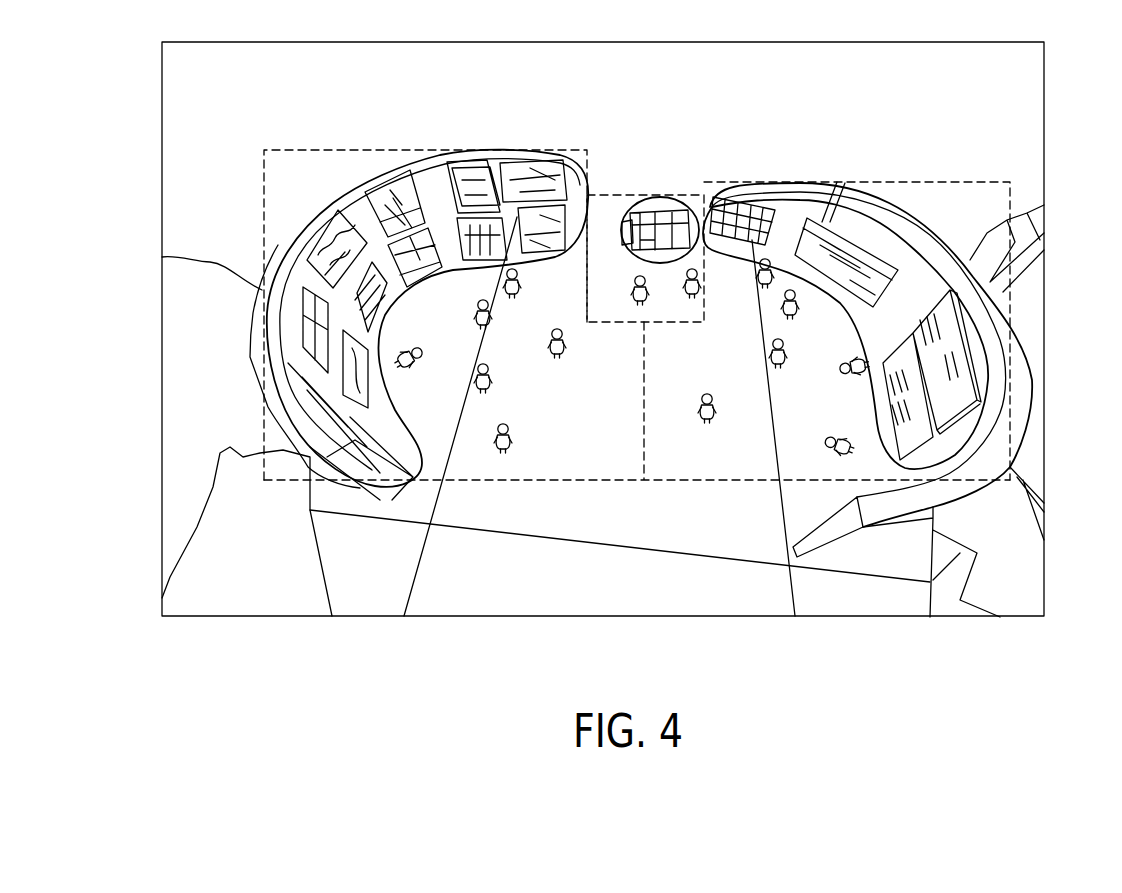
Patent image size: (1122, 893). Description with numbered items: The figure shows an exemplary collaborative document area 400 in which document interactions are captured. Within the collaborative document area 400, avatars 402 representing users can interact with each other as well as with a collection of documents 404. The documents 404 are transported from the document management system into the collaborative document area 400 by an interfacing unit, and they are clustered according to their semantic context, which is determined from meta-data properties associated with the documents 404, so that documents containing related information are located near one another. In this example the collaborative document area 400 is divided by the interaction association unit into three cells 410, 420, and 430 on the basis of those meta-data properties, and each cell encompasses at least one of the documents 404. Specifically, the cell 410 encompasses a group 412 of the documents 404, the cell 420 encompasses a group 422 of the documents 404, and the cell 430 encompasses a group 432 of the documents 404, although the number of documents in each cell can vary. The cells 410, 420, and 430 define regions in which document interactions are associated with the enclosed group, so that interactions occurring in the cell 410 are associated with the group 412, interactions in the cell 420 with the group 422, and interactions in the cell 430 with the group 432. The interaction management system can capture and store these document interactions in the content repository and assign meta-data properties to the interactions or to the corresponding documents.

The collaborative document area 400 is at (822, 640).
The avatars 402 is at (513, 305).
The documents 404 is at (362, 202).
The cell 410 is at (565, 146).
The group of documents 412 is at (520, 155).
The cell 420 is at (628, 193).
The group of documents 422 is at (633, 255).
The cell 430 is at (807, 180).
The group of documents 432 is at (926, 253).